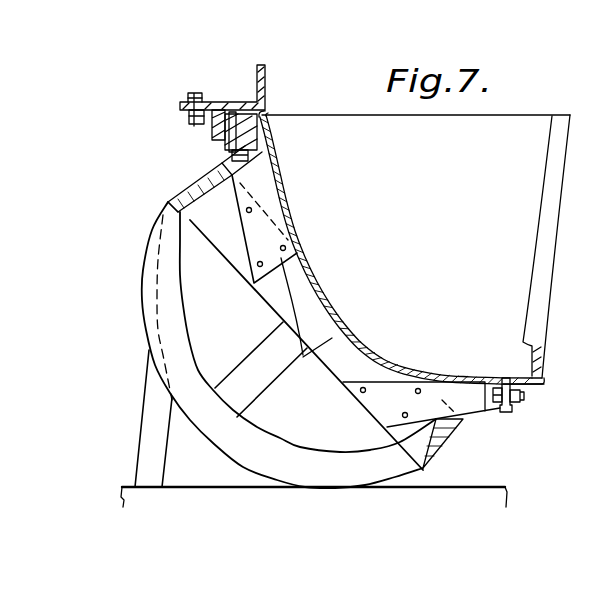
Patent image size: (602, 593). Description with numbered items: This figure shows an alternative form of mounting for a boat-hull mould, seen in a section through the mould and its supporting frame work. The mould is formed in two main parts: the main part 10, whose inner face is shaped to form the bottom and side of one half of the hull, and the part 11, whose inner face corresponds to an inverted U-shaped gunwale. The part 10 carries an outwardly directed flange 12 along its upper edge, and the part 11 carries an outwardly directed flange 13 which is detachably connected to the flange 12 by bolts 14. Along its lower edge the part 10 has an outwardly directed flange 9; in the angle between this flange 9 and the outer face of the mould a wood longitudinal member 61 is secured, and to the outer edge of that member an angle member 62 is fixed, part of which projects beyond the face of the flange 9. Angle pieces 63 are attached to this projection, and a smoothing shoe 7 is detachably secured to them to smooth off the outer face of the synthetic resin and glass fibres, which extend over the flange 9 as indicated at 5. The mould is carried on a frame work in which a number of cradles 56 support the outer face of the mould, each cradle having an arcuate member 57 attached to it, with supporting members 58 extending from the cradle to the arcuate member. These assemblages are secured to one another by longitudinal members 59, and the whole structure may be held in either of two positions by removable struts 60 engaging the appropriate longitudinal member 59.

The resin and glass fibre extension over flange 5 is at (270, 112).
The smoothing shoe 7 is at (194, 98).
The outwardly directed flange 9 is at (231, 112).
The mould main part 10 is at (349, 327).
The mould gunwale part 11 is at (545, 386).
The outwardly directed flange 12 is at (507, 412).
The outwardly directed flange 13 is at (515, 403).
The bolts 14 is at (521, 398).
The cradle 56 is at (362, 402).
The arcuate member 57 is at (257, 433).
The supporting member 58 is at (217, 383).
The longitudinal member 59 is at (180, 195).
The removable strut 60 is at (147, 393).
The wood longitudinal member 61 is at (259, 136).
The angle member 62 is at (222, 157).
The angle pieces 63 is at (212, 137).